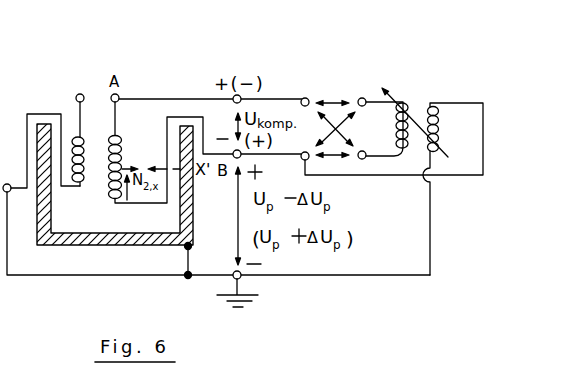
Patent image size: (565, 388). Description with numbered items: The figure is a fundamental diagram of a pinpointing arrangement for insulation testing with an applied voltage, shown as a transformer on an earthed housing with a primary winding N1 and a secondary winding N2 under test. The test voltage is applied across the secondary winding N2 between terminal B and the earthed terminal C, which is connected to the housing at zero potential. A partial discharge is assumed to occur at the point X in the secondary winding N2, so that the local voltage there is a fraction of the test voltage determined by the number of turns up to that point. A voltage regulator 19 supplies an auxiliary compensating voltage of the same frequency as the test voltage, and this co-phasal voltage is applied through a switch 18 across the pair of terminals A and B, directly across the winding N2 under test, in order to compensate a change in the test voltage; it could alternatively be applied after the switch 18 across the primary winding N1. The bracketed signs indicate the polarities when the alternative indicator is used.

The switch 18 is at (338, 88).
The voltage regulator 19 is at (418, 96).
The primary winding N1 is at (89, 140).
The secondary winding N2 is at (207, 148).
The partial discharge location X is at (137, 180).
The terminal A is at (233, 78).
The terminal B is at (237, 154).
The terminal C is at (237, 280).